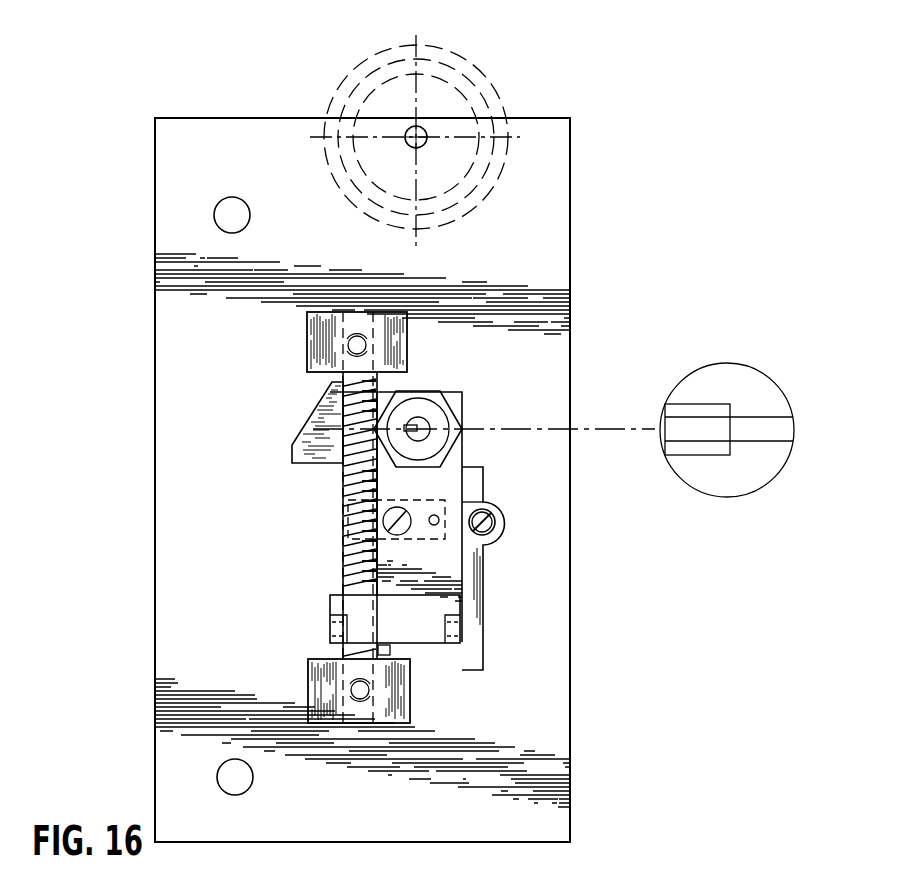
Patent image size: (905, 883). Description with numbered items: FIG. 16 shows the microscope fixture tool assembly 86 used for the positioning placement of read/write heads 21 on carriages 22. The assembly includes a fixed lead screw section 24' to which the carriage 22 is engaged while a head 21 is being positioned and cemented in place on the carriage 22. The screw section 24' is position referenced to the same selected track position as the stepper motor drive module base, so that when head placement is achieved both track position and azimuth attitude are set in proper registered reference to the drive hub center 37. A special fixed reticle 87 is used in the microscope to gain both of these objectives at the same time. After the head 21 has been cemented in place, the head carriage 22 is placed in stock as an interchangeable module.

The microscope fixture tool assembly 86 is at (573, 684).
The drive hub center 37 is at (424, 144).
The fixed lead screw section 24' is at (326, 515).
The carriage 22 is at (312, 422).
The head 21 is at (443, 420).
The fixed reticle 87 is at (771, 417).